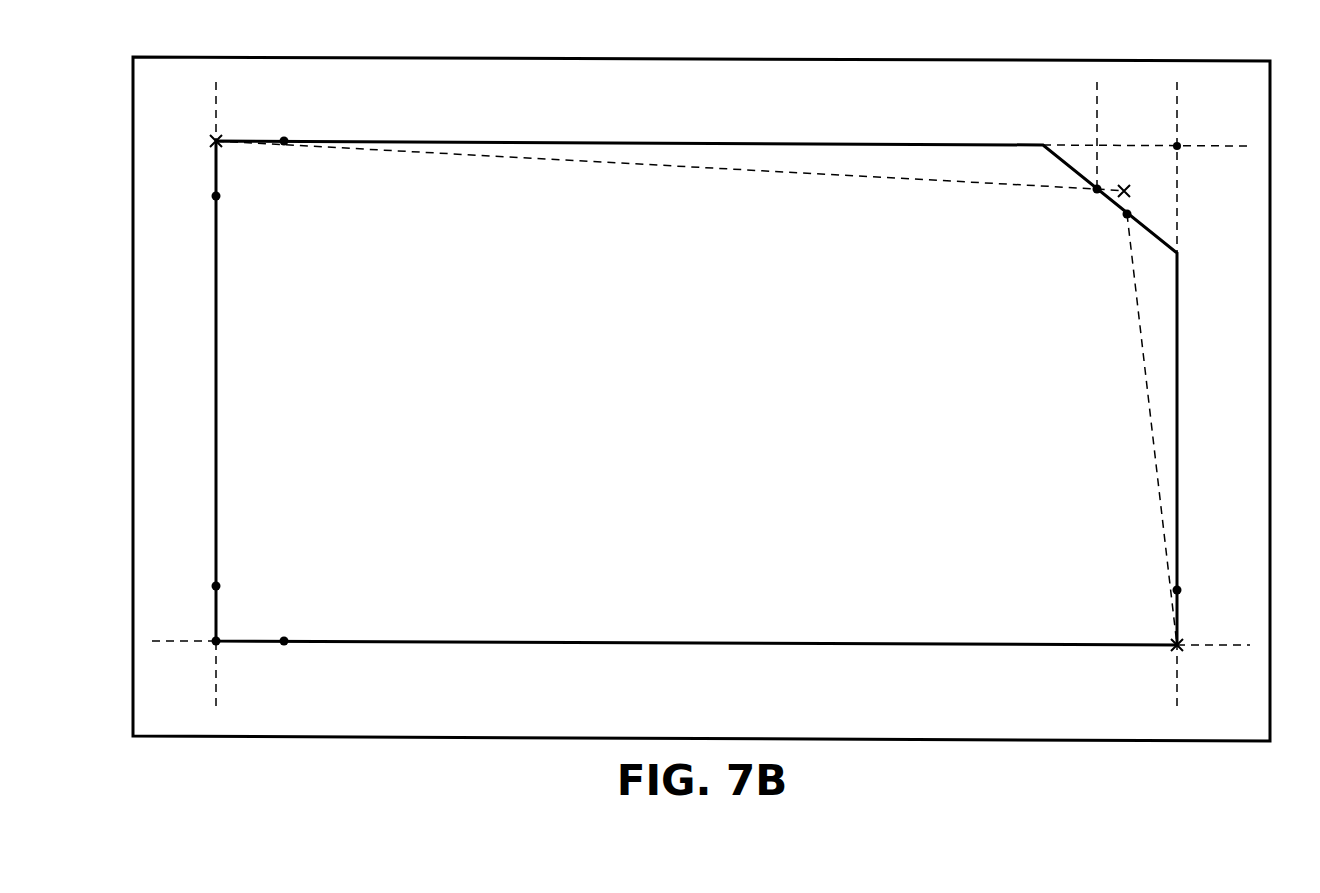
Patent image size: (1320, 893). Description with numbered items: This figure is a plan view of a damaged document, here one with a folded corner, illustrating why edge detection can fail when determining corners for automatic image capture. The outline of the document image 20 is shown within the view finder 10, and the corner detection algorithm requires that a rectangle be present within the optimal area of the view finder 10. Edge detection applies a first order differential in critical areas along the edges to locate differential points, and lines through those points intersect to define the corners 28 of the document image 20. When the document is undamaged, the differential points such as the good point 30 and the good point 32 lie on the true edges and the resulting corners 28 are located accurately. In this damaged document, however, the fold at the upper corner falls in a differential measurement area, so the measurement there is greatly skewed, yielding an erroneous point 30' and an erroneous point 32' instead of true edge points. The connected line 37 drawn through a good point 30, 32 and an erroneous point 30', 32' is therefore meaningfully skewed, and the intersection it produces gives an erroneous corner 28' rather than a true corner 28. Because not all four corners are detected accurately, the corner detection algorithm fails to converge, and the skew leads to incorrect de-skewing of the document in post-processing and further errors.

The view finder 10 is at (703, 57).
The document image 20 is at (716, 143).
The corner 28 is at (237, 615).
The erroneous corner 28' is at (701, 395).
The good point 30 is at (299, 393).
The erroneous point 30' is at (1062, 208).
The good point 32 is at (699, 392).
The erroneous point 32' is at (1095, 233).
The connected line 37 is at (773, 168).